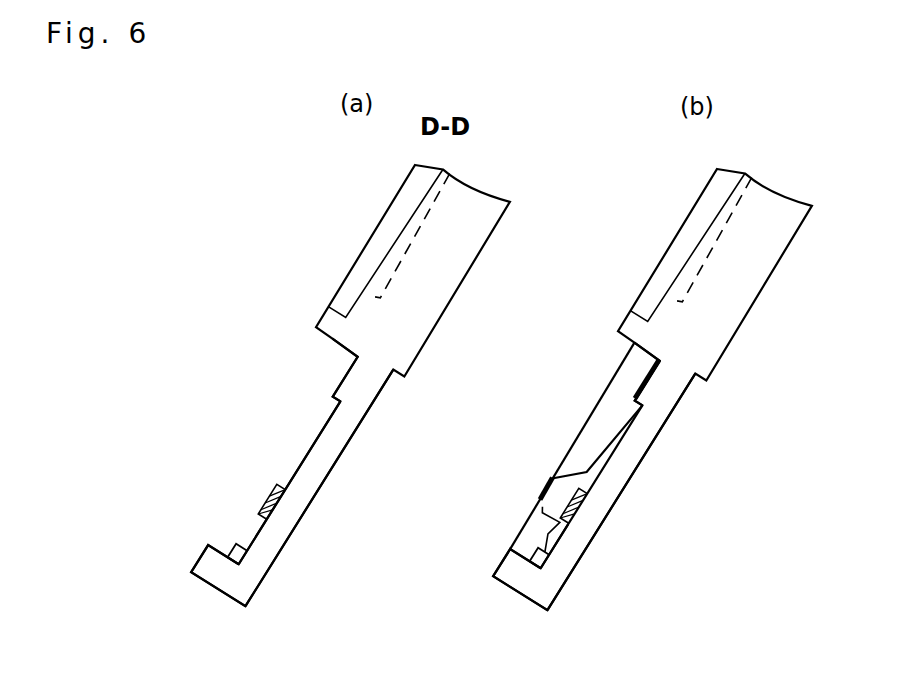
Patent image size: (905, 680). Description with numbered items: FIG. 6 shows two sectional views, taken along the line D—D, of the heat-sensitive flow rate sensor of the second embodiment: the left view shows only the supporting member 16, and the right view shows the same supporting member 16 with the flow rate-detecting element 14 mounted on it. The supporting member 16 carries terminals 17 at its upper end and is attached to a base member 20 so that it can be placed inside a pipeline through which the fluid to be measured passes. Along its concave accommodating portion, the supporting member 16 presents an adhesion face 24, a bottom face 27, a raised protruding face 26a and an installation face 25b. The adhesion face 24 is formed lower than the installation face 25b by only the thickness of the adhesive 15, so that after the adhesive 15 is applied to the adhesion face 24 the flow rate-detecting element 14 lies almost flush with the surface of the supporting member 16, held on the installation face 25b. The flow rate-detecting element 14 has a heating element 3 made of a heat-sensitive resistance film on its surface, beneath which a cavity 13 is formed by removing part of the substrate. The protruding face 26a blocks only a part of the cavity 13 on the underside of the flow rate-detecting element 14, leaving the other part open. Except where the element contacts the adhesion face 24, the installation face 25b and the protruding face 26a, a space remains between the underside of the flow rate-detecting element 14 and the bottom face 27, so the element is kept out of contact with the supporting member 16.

The heating element 3 is at (546, 486).
The cavity 13 is at (563, 537).
The flow rate-detecting element 14 is at (626, 375).
The adhesive 15 is at (655, 358).
The supporting member 16 is at (242, 579).
The terminals 17 is at (392, 238).
The base member 20 is at (420, 332).
The adhesion face 24 is at (350, 370).
The installation face 25b is at (235, 544).
The protruding face 26a is at (270, 495).
The bottom face 27 is at (326, 428).